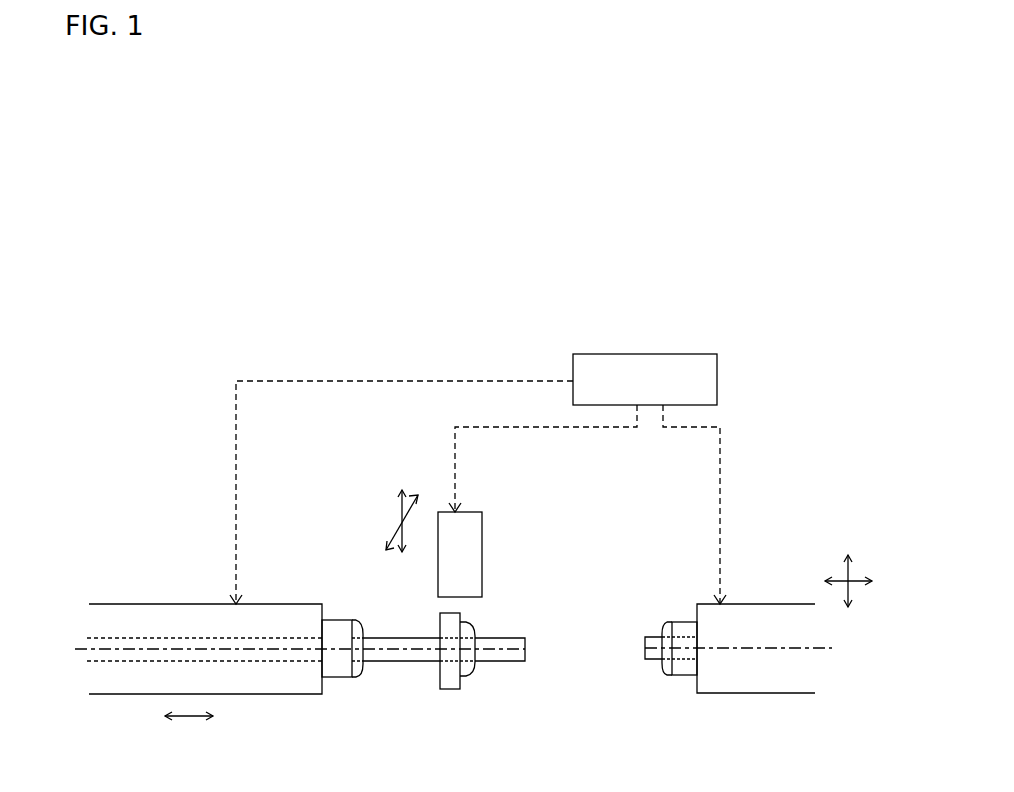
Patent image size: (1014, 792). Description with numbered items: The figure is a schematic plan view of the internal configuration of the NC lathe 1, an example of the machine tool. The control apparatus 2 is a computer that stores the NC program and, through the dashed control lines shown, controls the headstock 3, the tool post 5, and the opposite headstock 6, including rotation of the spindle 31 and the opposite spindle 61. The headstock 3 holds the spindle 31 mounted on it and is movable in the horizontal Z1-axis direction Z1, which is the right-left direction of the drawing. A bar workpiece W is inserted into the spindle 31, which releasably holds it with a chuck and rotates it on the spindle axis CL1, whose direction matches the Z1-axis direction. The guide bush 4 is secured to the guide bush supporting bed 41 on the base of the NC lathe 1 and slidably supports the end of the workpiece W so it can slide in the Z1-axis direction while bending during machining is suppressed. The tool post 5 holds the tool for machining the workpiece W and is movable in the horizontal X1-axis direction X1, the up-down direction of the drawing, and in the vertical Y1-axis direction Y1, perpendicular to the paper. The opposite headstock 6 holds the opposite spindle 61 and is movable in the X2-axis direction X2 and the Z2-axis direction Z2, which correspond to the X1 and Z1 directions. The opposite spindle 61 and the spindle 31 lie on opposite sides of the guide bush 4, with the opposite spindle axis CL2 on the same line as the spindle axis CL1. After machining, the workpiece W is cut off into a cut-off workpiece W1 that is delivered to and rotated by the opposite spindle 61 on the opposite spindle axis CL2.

The NC lathe 1 is at (768, 476).
The control apparatus 2 is at (653, 352).
The headstock 3 is at (277, 695).
The spindle 31 is at (337, 677).
The guide bush 4 is at (474, 624).
The guide bush supporting bed 41 is at (447, 690).
The tool post 5 is at (475, 512).
The opposite headstock 6 is at (775, 604).
The opposite spindle 61 is at (680, 621).
The workpiece W is at (512, 662).
The cut-off workpiece W1 is at (654, 660).
The spindle axis CL1 is at (80, 648).
The opposite spindle axis CL2 is at (817, 646).
The X1-axis direction X1 is at (400, 513).
The Y1-axis direction Y1 is at (388, 530).
The Z1-axis direction Z1 is at (189, 727).
The X2-axis direction X2 is at (848, 573).
The Z2-axis direction Z2 is at (861, 582).